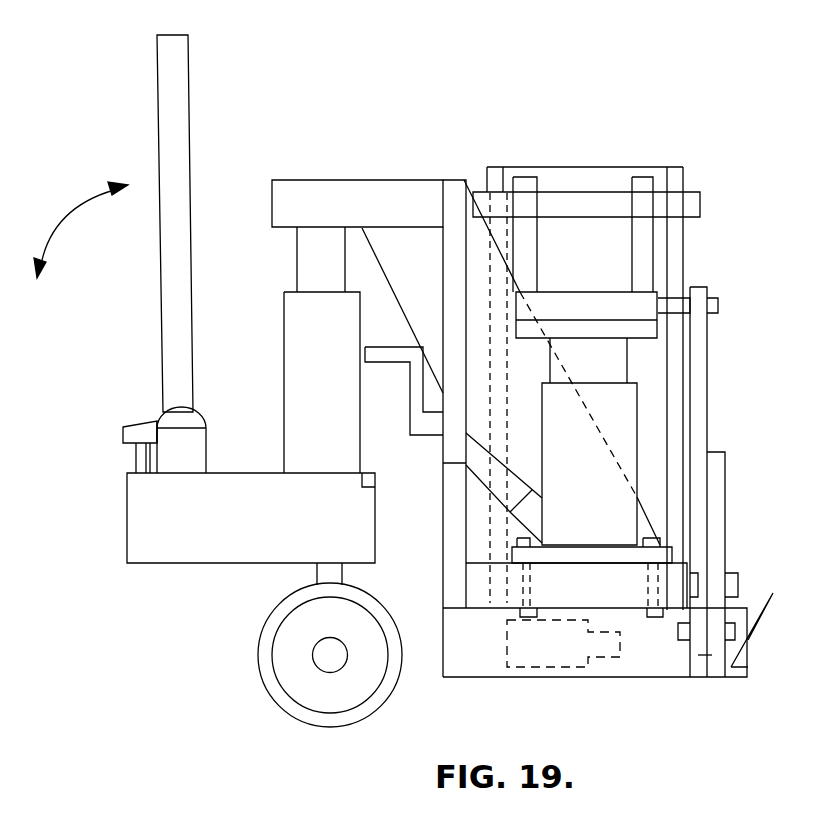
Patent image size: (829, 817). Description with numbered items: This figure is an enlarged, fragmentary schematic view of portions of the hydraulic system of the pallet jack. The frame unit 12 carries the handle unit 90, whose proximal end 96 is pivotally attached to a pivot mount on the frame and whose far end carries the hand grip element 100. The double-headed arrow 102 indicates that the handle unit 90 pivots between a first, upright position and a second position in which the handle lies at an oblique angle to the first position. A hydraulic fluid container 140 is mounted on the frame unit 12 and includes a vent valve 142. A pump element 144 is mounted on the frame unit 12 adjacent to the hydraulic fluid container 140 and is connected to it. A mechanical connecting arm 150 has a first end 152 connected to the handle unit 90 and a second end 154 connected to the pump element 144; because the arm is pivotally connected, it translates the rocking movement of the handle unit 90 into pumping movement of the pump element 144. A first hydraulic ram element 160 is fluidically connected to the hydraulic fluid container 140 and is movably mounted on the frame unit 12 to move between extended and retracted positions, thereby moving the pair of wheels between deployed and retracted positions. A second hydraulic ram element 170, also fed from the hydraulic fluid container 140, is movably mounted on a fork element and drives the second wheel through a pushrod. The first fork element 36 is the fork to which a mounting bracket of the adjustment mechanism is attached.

The handle unit 90 is at (223, 143).
The proximal end 96 is at (185, 398).
The hand grip element 100 is at (220, 431).
The double-headed arrow 102 is at (65, 223).
The mechanical connecting arm 150 is at (112, 417).
The first end 152 is at (148, 423).
The second end 154 is at (130, 433).
The pump element 144 is at (143, 463).
The hydraulic fluid container 140 is at (310, 533).
The vent valve 142 is at (376, 485).
The first fork element 36 is at (567, 166).
The first hydraulic ram element 160 is at (637, 402).
The frame unit 12 is at (750, 479).
The second hydraulic ram element 170 is at (557, 657).